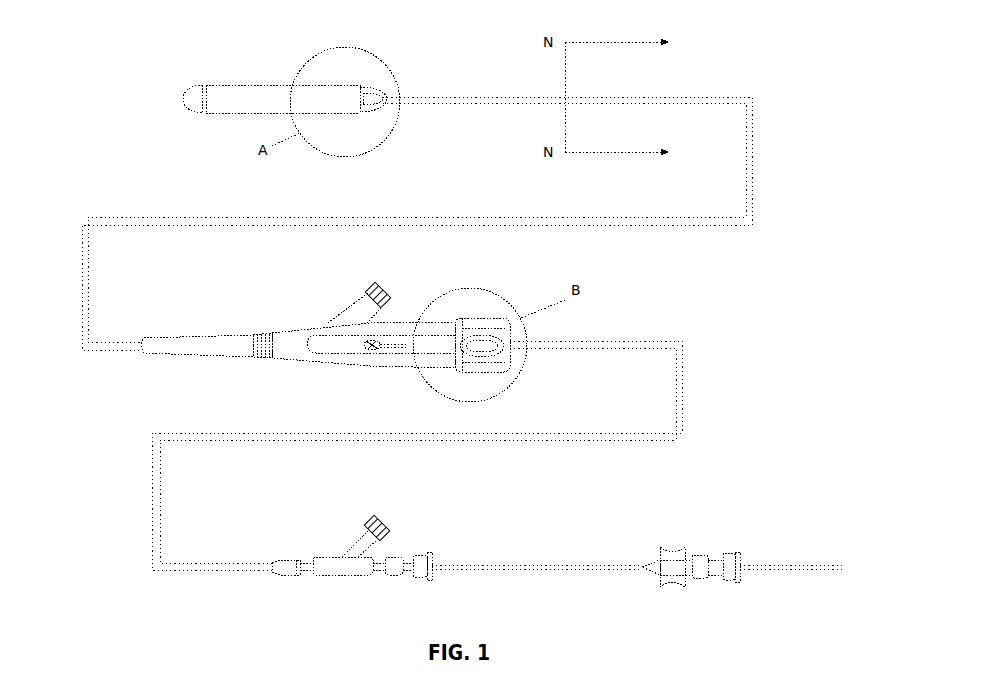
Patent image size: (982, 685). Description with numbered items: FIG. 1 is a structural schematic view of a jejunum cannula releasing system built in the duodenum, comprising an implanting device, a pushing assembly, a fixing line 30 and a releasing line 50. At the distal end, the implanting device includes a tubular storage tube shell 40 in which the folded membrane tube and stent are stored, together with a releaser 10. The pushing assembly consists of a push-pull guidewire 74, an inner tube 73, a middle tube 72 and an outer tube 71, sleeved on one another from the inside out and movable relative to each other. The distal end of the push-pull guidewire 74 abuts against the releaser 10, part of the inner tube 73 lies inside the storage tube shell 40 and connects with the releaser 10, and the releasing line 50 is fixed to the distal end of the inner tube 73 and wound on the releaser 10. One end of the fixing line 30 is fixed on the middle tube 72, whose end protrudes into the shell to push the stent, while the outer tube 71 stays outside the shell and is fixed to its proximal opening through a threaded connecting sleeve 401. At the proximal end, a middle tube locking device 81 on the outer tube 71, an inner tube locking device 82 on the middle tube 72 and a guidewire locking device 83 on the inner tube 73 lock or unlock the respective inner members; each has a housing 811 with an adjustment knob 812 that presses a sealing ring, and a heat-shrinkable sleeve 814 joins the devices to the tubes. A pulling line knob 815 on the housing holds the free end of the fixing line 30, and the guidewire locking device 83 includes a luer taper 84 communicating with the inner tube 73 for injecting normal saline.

The releaser 10 is at (280, 61).
The fixing line 30 is at (233, 61).
The storage tube shell 40 is at (283, 61).
The connecting sleeve 401 is at (392, 66).
The releasing line 50 is at (170, 61).
The outer tube 71 is at (417, 187).
The middle tube 72 is at (185, 563).
The inner tube 73 is at (537, 527).
The push-pull guidewire 74 is at (791, 525).
The middle tube locking device 81 is at (300, 318).
The housing 811 is at (358, 361).
The adjustment knob 812 is at (497, 318).
The heat-shrinkable sleeve 814 is at (211, 313).
The pulling line knob 815 is at (388, 290).
The inner tube locking device 82 is at (348, 578).
The guidewire locking device 83 is at (703, 578).
The luer taper 84 is at (667, 537).